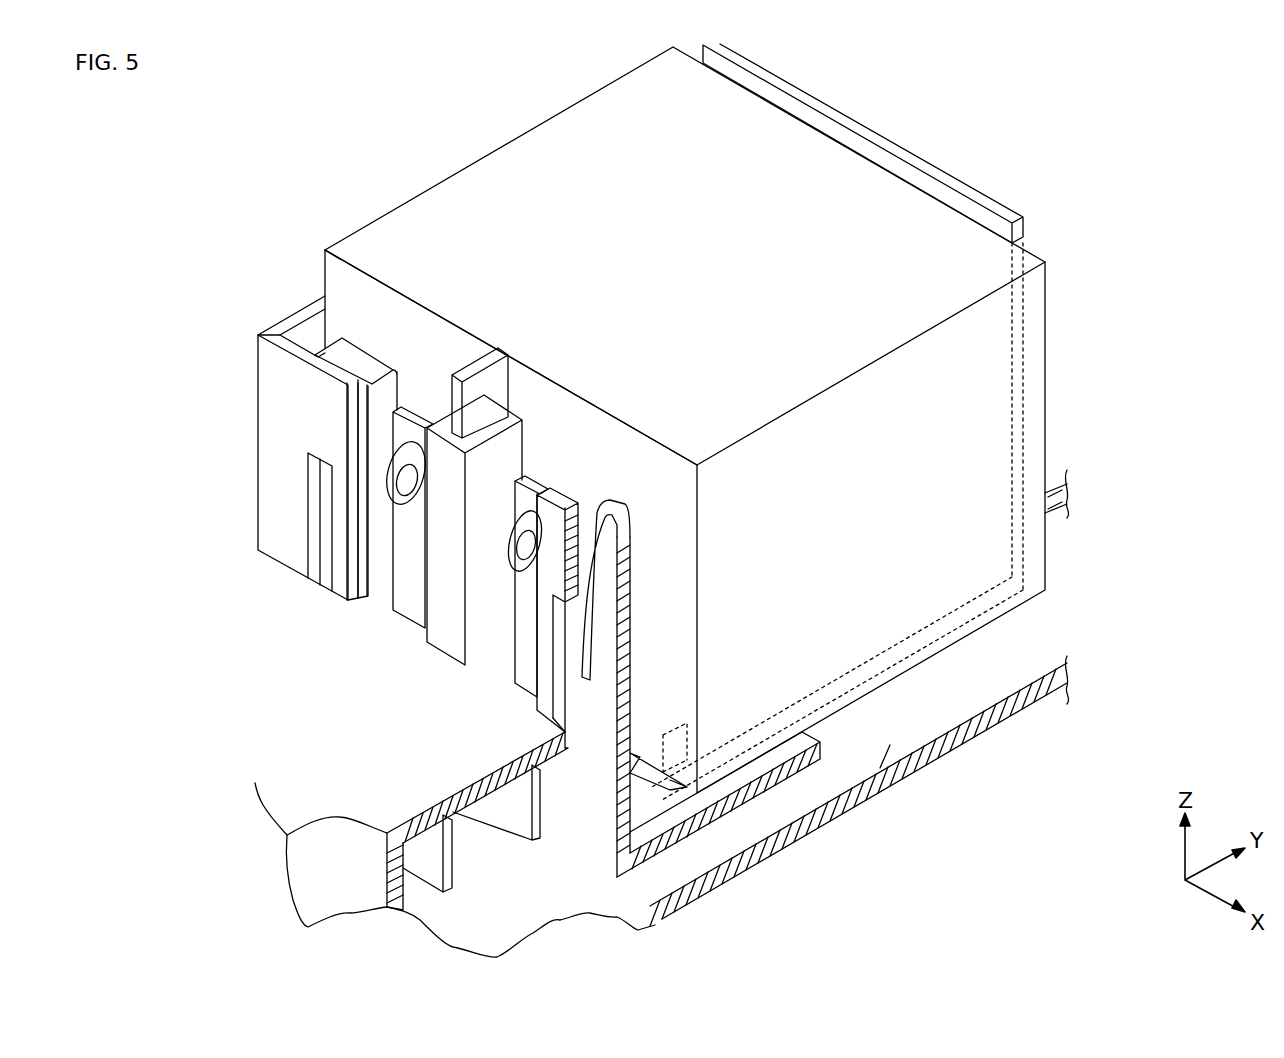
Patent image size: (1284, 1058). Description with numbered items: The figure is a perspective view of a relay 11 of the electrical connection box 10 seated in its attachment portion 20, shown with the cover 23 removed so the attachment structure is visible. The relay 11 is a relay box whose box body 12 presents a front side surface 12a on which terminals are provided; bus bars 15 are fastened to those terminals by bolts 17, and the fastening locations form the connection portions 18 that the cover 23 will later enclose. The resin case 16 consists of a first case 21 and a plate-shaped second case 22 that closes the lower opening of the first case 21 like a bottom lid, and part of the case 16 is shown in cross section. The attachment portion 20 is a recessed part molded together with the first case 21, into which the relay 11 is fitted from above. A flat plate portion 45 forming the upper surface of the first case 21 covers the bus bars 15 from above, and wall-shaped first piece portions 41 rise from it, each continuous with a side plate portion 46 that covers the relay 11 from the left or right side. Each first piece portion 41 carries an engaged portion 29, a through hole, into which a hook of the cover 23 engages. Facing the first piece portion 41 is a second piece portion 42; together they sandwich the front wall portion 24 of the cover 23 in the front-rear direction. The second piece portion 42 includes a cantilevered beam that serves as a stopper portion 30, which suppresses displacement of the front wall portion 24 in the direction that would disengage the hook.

The electrical connection box 10 is at (990, 730).
The relay 11 is at (862, 193).
The box body 12 is at (1047, 350).
The front side surface 12a is at (340, 278).
The bus bar 15 is at (783, 778).
The case 16 is at (191, 655).
The bolt 17 is at (412, 507).
The connection portion 18 is at (397, 443).
The attachment portion 20 is at (652, 793).
The first case 21 is at (488, 797).
The second case 22 is at (893, 772).
The cover 23 is at (365, 304).
The front wall portion 24 is at (590, 715).
The engaged portion 29 is at (313, 465).
The stopper portion 30 is at (620, 655).
The first piece portion 41 is at (267, 413).
The second piece portion 42 is at (365, 348).
The flat plate portion 45 is at (322, 770).
The side plate portion 46 is at (292, 316).